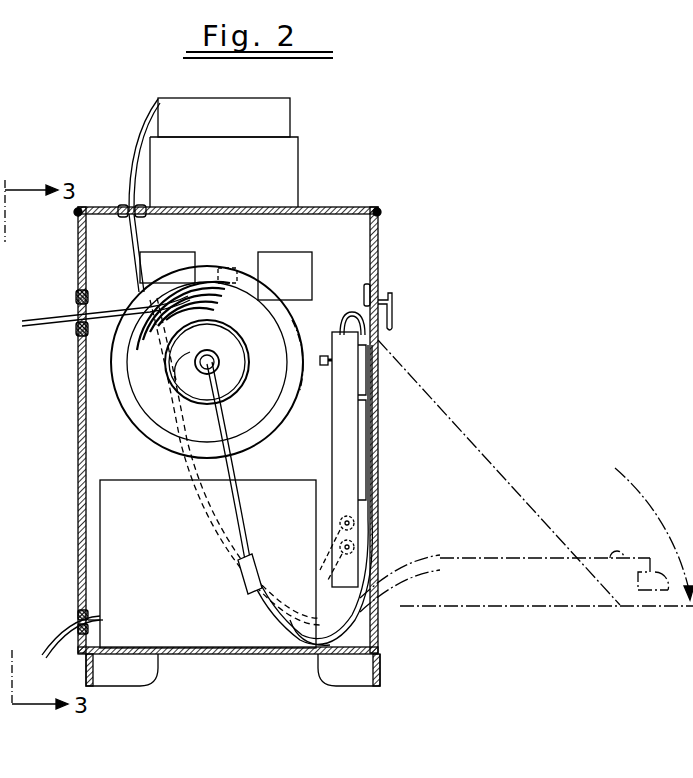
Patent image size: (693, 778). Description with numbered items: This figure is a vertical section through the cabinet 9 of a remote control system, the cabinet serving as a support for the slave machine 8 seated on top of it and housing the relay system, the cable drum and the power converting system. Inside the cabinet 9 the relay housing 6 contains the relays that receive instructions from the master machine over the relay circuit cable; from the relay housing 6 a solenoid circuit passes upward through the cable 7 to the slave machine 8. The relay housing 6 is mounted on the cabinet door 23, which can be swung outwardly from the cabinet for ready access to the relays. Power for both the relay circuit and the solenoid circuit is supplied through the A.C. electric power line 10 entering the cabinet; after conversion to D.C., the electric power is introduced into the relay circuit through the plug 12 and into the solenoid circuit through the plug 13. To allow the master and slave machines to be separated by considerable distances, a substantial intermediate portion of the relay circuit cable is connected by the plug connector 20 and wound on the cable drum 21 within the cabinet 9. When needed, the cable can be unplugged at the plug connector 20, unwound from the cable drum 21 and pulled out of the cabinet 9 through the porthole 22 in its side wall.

The relay housing 6 is at (333, 452).
The cable 7 is at (127, 140).
The slave machine 8 is at (303, 150).
The cabinet 9 is at (376, 262).
The A.C. electric power line 10 is at (48, 658).
The plug 12 is at (356, 525).
The plug 13 is at (356, 548).
The plug connector 20 is at (262, 572).
The cable drum 21 is at (147, 433).
The porthole 22 is at (80, 313).
The cabinet door 23 is at (378, 466).